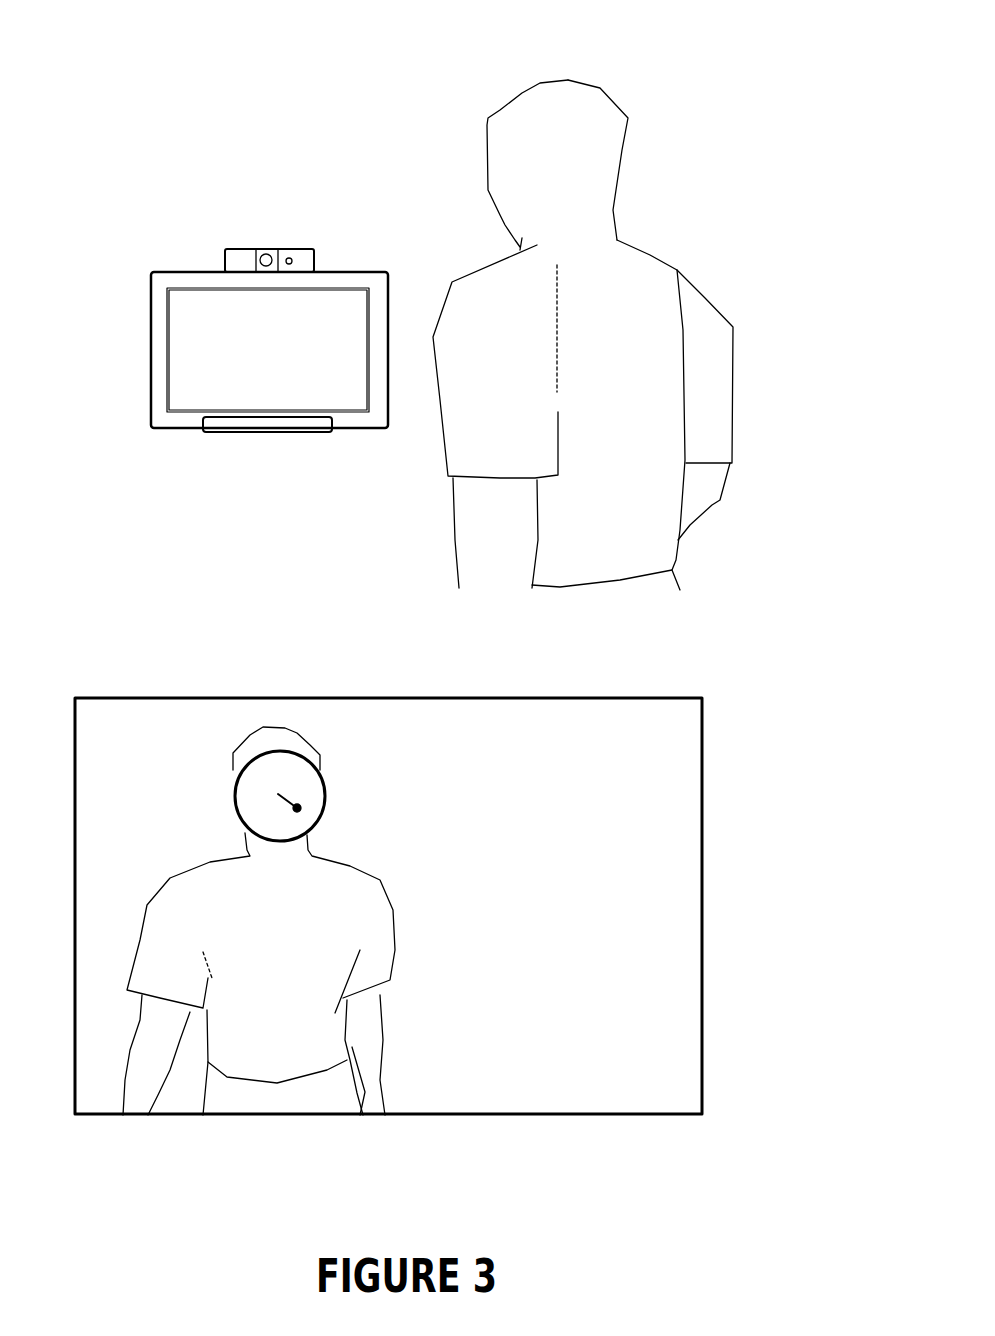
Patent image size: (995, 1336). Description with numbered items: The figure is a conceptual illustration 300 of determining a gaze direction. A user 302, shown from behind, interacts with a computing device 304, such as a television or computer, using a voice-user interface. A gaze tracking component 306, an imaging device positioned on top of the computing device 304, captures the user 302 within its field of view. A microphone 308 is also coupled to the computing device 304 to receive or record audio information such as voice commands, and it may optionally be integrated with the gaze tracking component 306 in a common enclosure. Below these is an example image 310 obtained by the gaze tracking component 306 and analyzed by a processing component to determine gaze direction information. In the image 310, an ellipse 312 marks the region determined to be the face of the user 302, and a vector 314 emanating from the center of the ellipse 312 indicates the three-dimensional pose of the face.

The conceptual illustration 300 is at (106, 53).
The user 302 is at (570, 58).
The computing device 304 is at (147, 348).
The gaze tracking component 306 is at (267, 248).
The microphone 308 is at (267, 432).
The image 310 is at (73, 935).
The ellipse 312 is at (233, 807).
The vector 314 is at (310, 789).